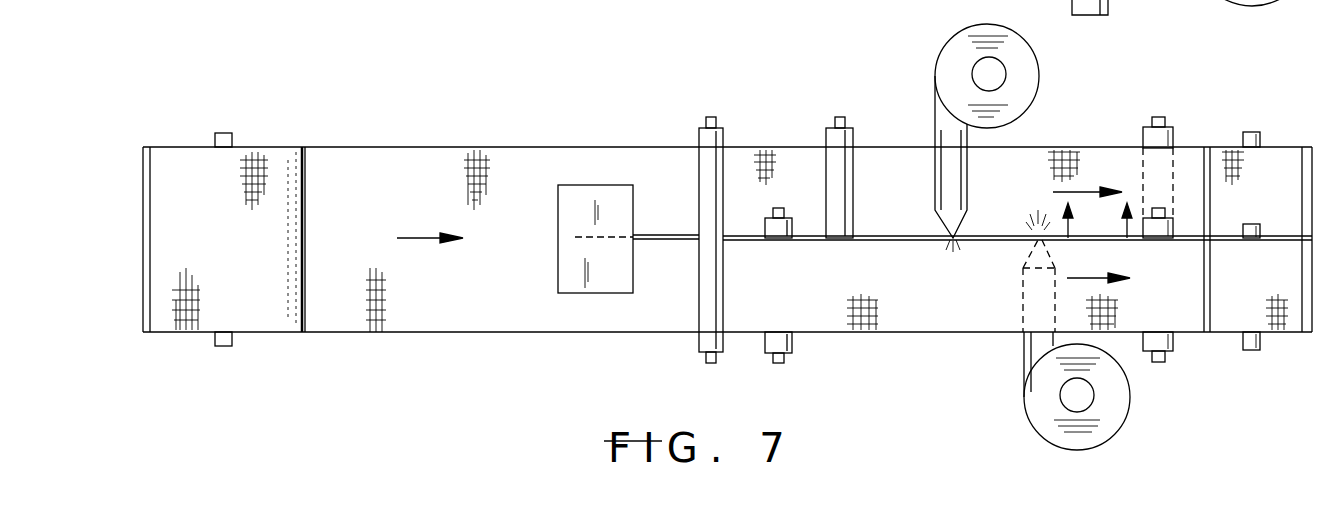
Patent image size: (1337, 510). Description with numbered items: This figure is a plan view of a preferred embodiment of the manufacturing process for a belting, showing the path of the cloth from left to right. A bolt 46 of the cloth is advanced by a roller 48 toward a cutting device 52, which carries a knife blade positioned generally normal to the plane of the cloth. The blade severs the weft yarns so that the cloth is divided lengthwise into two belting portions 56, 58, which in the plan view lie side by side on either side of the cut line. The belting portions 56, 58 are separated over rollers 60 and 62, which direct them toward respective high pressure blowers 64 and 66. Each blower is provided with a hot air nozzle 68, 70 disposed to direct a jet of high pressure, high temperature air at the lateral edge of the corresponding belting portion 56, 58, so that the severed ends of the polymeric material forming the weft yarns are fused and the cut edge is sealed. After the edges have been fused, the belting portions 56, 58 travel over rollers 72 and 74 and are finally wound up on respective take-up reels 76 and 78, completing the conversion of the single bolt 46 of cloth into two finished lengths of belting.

The bolt of cloth 46 is at (281, 163).
The roller 48 is at (716, 140).
The cutting device 52 is at (594, 183).
The belting portion 56 is at (812, 306).
The belting portion 58 is at (782, 140).
The roller 60 is at (772, 340).
The roller 62 is at (846, 140).
The high pressure blower 64 is at (1146, 408).
The high pressure blower 66 is at (1046, 42).
The hot air nozzle 68 is at (958, 222).
The hot air nozzle 70 is at (1040, 250).
The roller 72 is at (1170, 352).
The roller 74 is at (1163, 136).
The take-up reel 76 is at (1283, 316).
The take-up reel 78 is at (1278, 158).